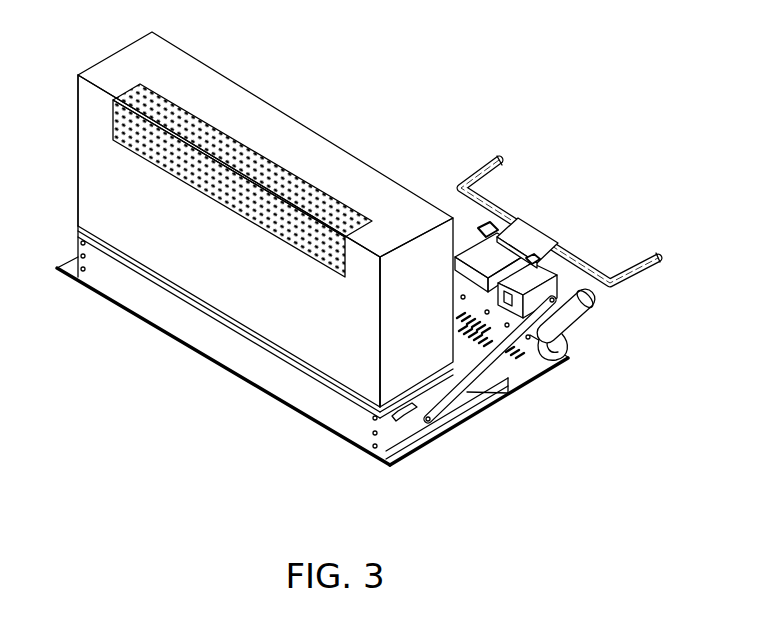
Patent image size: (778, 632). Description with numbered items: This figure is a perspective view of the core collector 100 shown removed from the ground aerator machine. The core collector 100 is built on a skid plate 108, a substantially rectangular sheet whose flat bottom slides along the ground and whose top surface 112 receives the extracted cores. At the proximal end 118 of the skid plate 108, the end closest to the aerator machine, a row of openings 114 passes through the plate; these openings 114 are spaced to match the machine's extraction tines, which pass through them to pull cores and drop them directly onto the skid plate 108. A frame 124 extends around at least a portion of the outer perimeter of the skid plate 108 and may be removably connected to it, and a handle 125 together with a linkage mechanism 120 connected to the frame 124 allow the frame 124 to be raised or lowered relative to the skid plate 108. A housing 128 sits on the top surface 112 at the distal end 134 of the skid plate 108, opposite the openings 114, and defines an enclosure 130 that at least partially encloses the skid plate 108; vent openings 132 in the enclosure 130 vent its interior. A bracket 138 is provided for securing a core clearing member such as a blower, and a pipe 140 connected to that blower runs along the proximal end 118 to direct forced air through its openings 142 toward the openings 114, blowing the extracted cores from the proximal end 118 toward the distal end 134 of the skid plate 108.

The core collector 100 is at (444, 75).
The skid plate 108 is at (432, 460).
The top surface 112 is at (517, 373).
The openings 114 is at (520, 377).
The proximal end 118 is at (559, 404).
The linkage mechanism 120 is at (467, 384).
The frame 124 is at (263, 364).
The handle 125 is at (408, 424).
The housing 128 is at (300, 121).
The enclosure 130 is at (248, 273).
The vent openings 132 is at (113, 118).
The distal end 134 is at (343, 448).
The bracket 138 is at (547, 290).
The pipe 140 is at (565, 330).
The openings 142 is at (567, 352).